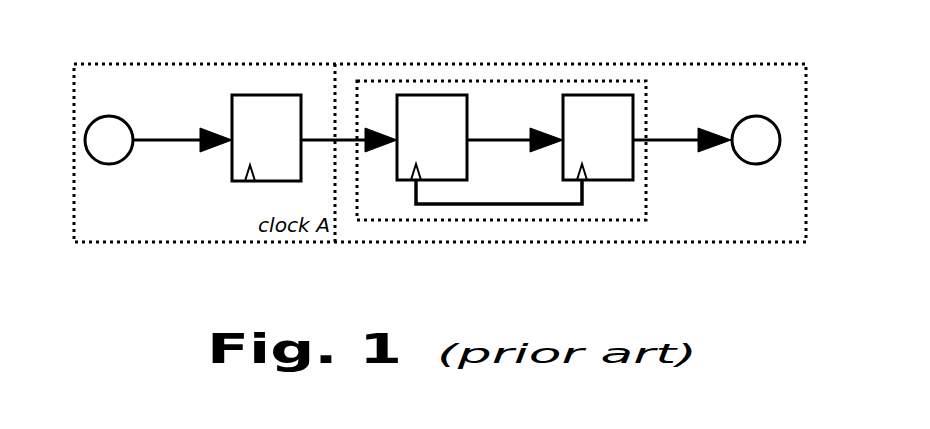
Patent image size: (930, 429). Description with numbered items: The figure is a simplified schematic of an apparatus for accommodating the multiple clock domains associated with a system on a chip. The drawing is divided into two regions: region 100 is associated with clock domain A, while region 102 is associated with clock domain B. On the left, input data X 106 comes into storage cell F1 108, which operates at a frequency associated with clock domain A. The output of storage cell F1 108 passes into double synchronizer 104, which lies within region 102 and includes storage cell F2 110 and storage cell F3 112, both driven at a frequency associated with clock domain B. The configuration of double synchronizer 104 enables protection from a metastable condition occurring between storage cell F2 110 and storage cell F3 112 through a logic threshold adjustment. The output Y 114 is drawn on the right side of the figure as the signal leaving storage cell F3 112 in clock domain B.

The region 100 is at (175, 64).
The region 102 is at (492, 64).
The double synchronizer 104 is at (633, 64).
The input data X 106 is at (109, 116).
The storage cell F1 108 is at (265, 95).
The storage cell F2 110 is at (430, 95).
The storage cell F3 112 is at (597, 95).
The output signal Y 114 is at (757, 116).